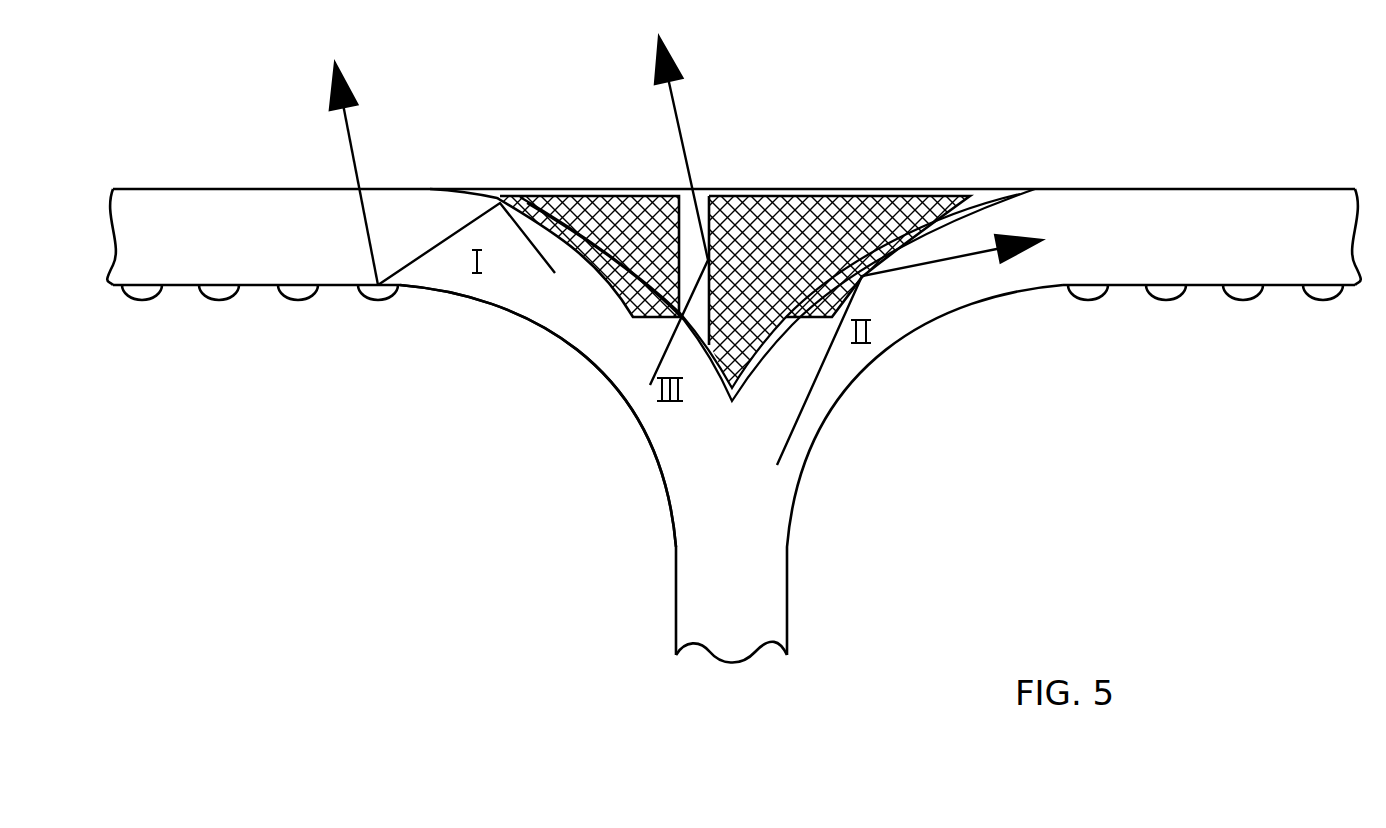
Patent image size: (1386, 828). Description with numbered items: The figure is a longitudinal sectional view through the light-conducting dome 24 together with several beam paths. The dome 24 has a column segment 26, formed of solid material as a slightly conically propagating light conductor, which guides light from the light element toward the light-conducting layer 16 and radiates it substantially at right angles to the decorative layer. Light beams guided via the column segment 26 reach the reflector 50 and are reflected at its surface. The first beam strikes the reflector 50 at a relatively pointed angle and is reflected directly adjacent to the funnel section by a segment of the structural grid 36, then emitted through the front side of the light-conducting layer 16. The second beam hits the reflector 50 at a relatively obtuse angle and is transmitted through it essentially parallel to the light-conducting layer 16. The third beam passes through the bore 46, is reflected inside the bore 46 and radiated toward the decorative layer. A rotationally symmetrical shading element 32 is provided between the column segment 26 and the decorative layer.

The light-conducting layer 16 is at (1216, 251).
The light-conducting dome 24 is at (787, 633).
The column segment 26 is at (777, 510).
The shading element 32 is at (857, 210).
The structural grid 36 is at (226, 302).
The bore 46 is at (706, 192).
The reflector 50 is at (618, 303).